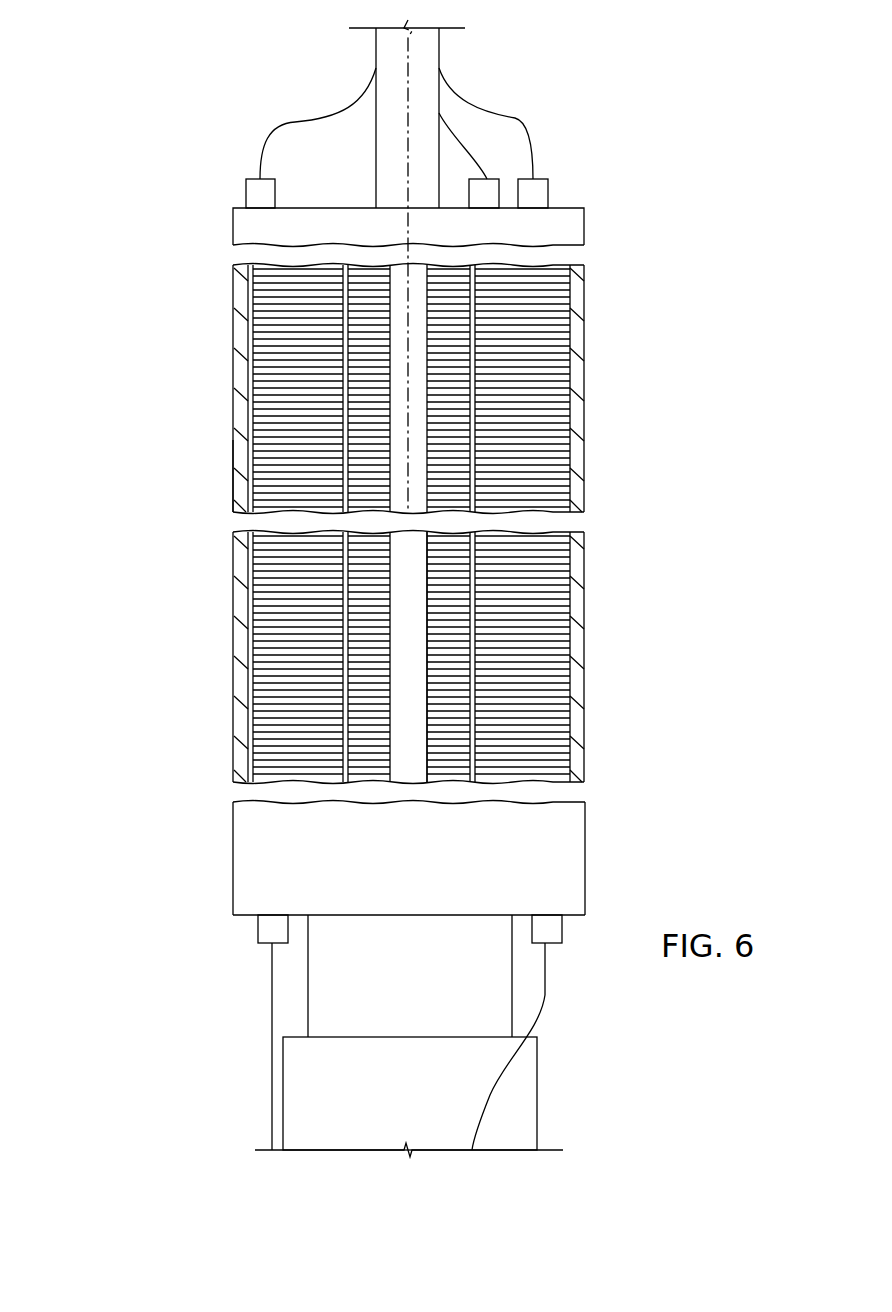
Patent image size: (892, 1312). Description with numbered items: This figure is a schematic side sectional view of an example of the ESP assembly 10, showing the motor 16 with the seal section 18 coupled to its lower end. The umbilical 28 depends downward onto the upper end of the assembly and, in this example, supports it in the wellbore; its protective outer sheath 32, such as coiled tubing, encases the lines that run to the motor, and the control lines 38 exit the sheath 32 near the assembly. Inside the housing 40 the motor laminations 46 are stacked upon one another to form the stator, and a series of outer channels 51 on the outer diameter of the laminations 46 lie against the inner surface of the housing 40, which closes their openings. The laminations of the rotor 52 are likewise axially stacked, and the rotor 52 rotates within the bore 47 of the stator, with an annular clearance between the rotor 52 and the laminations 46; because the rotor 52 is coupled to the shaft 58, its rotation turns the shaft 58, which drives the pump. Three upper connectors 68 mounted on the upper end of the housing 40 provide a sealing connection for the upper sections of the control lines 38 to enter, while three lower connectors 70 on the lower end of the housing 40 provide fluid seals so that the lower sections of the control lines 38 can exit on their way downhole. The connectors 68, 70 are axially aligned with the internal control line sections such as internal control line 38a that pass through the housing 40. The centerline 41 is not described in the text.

The ESP assembly 10 is at (150, 126).
The umbilical 28 is at (300, 79).
The protective outer sheath 32 is at (376, 53).
The centerline / shaft 41 is at (409, 50).
The control line 38 is at (533, 153).
The upper connectors 68 is at (245, 193).
The rotor 52 is at (375, 290).
The housing 40 is at (234, 328).
The motor laminations 46 is at (557, 317).
The outer slots or channels 51 is at (248, 422).
The bore 47 is at (470, 393).
The internal control line 38a is at (240, 470).
The motor 16 is at (636, 567).
The shaft 58 is at (407, 758).
The lower connectors 70 is at (257, 932).
The seal section 18 is at (513, 975).